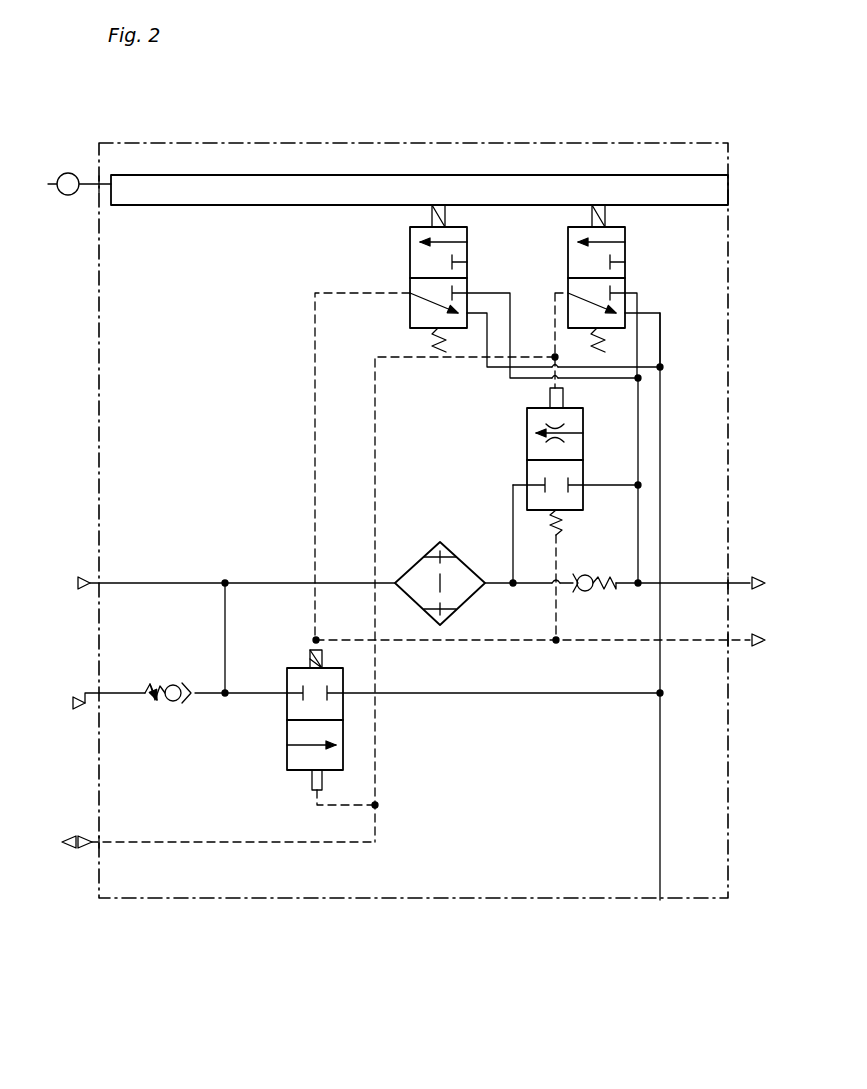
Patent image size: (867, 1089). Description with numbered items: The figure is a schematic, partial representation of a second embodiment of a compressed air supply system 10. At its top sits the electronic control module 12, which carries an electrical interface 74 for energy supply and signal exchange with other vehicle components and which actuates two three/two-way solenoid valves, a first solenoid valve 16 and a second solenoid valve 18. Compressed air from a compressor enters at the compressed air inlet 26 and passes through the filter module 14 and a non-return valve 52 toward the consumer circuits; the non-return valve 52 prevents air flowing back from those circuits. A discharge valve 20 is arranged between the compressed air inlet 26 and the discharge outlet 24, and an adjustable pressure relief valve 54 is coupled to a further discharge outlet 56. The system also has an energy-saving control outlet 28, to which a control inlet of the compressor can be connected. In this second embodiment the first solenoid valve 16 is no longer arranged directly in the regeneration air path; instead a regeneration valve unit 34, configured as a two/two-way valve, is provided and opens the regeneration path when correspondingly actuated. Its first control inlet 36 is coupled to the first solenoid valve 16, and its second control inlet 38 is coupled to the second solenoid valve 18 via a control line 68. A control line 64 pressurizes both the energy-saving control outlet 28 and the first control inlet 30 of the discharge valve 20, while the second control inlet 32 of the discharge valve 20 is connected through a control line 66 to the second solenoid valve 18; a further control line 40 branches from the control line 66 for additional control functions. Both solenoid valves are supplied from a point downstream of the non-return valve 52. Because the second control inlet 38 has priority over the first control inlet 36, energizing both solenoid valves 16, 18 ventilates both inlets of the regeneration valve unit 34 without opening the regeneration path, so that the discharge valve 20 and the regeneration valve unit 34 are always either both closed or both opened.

The compressed air supply system 10 is at (373, 142).
The electronic control module 12 is at (274, 207).
The filter module 14 is at (464, 598).
The first solenoid valve 16 is at (628, 252).
The second solenoid valve 18 is at (405, 256).
The discharge valve 20 is at (287, 758).
The discharge outlet 24 is at (660, 902).
The compressed air inlet 26 is at (78, 578).
The energy-saving control outlet 28 is at (68, 854).
The first control inlet of the discharge valve 30 is at (310, 787).
The second control inlet of the discharge valve 32 is at (306, 651).
The regeneration valve unit 34 is at (527, 470).
The first control inlet of the regeneration valve unit 36 is at (546, 397).
The second control inlet of the regeneration valve unit 38 is at (565, 527).
The further control line 40 is at (467, 640).
The non-return valve 52 is at (578, 575).
The adjustable pressure relief valve 54 is at (181, 716).
The discharge outlet 56 is at (73, 707).
The control line 64 is at (378, 421).
The control line 66 is at (312, 410).
The control line 68 is at (562, 615).
The electrical interface 74 is at (68, 172).